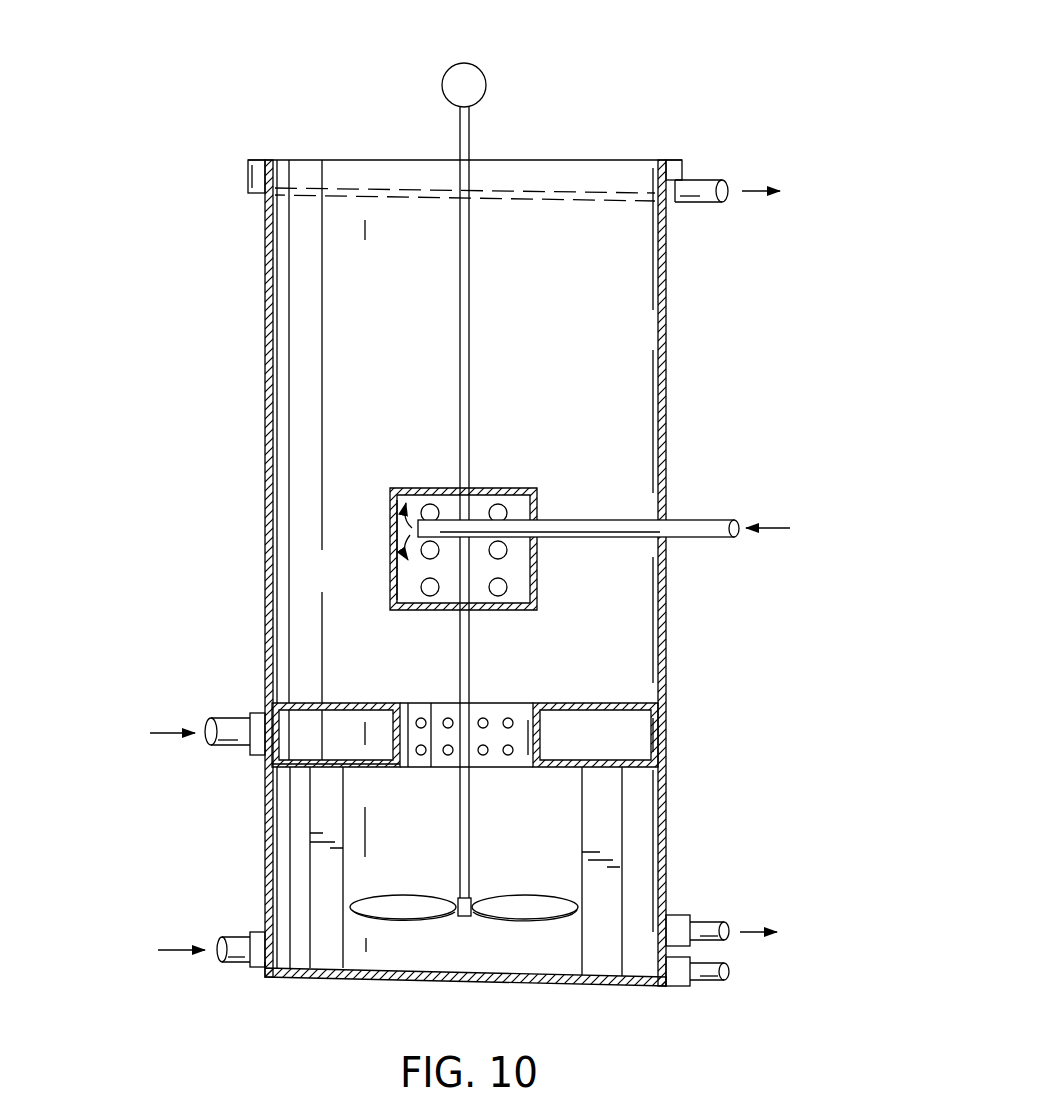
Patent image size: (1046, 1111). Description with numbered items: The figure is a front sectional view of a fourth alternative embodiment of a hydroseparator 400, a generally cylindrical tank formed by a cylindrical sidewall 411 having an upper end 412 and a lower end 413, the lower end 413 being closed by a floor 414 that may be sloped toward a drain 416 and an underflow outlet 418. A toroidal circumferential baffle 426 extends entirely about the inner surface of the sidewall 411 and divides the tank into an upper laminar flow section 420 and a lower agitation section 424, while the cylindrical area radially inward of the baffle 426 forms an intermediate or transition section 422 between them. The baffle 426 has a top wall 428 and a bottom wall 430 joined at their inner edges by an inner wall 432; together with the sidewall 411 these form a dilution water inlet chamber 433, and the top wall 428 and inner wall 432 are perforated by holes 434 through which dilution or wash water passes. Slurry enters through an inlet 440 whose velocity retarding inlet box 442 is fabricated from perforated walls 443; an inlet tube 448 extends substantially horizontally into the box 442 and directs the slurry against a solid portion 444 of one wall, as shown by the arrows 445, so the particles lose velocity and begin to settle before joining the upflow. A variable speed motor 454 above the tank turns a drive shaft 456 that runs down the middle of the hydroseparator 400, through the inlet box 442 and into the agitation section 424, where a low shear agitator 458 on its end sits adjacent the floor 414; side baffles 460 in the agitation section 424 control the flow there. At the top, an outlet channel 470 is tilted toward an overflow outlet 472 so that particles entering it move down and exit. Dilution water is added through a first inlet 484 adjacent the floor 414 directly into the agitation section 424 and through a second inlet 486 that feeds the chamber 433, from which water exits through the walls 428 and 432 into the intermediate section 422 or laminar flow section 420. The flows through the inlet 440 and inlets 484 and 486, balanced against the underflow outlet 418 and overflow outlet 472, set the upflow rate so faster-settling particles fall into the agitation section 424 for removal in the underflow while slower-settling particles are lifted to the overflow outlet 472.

The hydroseparator 400 is at (430, 529).
The cylindrical sidewall 411 is at (268, 362).
The upper end 412 is at (270, 165).
The lower end 413 is at (268, 968).
The floor 414 is at (540, 985).
The drain 416 is at (673, 985).
The underflow outlet 418 is at (673, 930).
The laminar flow section 420 is at (618, 378).
The intermediate section 422 is at (449, 729).
The agitation section 424 is at (565, 838).
The circumferential baffle 426 is at (645, 702).
The top wall 428 is at (303, 700).
The bottom wall 430 is at (302, 768).
The inner wall 432 is at (398, 742).
The dilution water inlet chamber 433 is at (637, 737).
The holes 434 is at (388, 703).
The inlet 440 is at (467, 517).
The inlet box 442 is at (532, 482).
The perforated walls 443 is at (535, 562).
The solid portion 444 is at (395, 518).
The arrows 445 is at (404, 522).
The inlet tube 448 is at (690, 537).
The variable speed motor 454 is at (482, 78).
The drive shaft 456 is at (470, 305).
The low shear agitator 458 is at (398, 905).
The side baffles 460 is at (323, 860).
The outlet channel 470 is at (258, 178).
The overflow outlet 472 is at (688, 192).
The first dilution water inlet 484 is at (262, 942).
The second dilution water inlet 486 is at (260, 735).